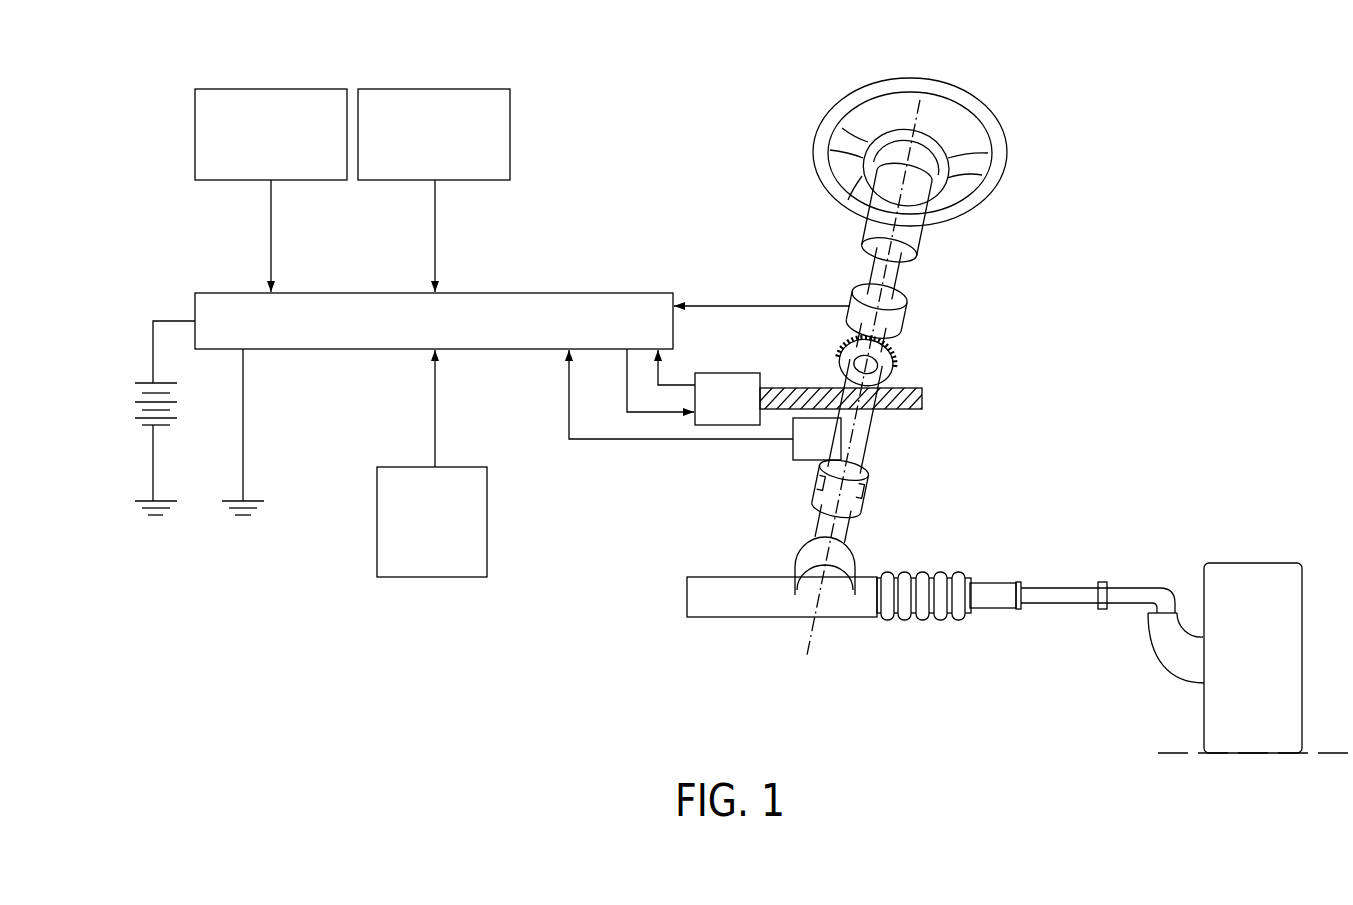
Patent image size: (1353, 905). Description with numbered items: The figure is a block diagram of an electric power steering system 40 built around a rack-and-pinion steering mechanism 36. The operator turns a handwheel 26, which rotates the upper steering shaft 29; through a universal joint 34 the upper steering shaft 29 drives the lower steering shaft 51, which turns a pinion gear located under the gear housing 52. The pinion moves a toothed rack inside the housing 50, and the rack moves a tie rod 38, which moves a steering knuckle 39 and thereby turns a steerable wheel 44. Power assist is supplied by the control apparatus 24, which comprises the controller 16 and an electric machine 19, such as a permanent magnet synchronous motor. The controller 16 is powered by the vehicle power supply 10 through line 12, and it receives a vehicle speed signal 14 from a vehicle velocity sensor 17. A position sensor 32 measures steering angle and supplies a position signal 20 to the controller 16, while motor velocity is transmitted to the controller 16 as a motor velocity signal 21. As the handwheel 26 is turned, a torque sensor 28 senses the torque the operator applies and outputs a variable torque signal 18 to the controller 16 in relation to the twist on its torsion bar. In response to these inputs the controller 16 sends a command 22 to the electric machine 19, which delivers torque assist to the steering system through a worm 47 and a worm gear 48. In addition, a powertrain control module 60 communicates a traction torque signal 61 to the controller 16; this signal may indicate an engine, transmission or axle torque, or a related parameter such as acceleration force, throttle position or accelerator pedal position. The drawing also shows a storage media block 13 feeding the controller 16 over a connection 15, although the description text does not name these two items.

The vehicle power supply 10 is at (138, 410).
The line 12 is at (166, 320).
The storage media 13 is at (270, 89).
The vehicle speed signal 14 is at (434, 212).
The storage media signal 15 is at (270, 213).
The controller 16 is at (403, 350).
The vehicle velocity sensor 17 is at (432, 89).
The variable torque signal 18 is at (772, 303).
The electric machine 19 is at (737, 372).
The position signal 20 is at (688, 441).
The motor velocity signal 21 is at (680, 385).
The command 22 is at (640, 414).
The control apparatus 24 is at (1088, 296).
The handwheel 26 is at (962, 105).
The torque sensor 28 is at (877, 311).
The upper steering shaft 29 is at (884, 273).
The position sensor 32 is at (792, 452).
The universal joint 34 is at (840, 488).
The steering mechanism 36 is at (950, 566).
The tie rod 38 is at (1057, 595).
The steering knuckle 39 is at (1175, 647).
The electric power steering system 40 is at (1164, 392).
The steerable wheel 44 is at (1240, 575).
The worm 47 is at (917, 402).
The worm gear 48 is at (866, 361).
The housing 50 is at (723, 605).
The lower steering shaft 51 is at (833, 523).
The gear housing 52 is at (803, 557).
The powertrain control module 60 is at (489, 520).
The traction torque signal 61 is at (437, 423).